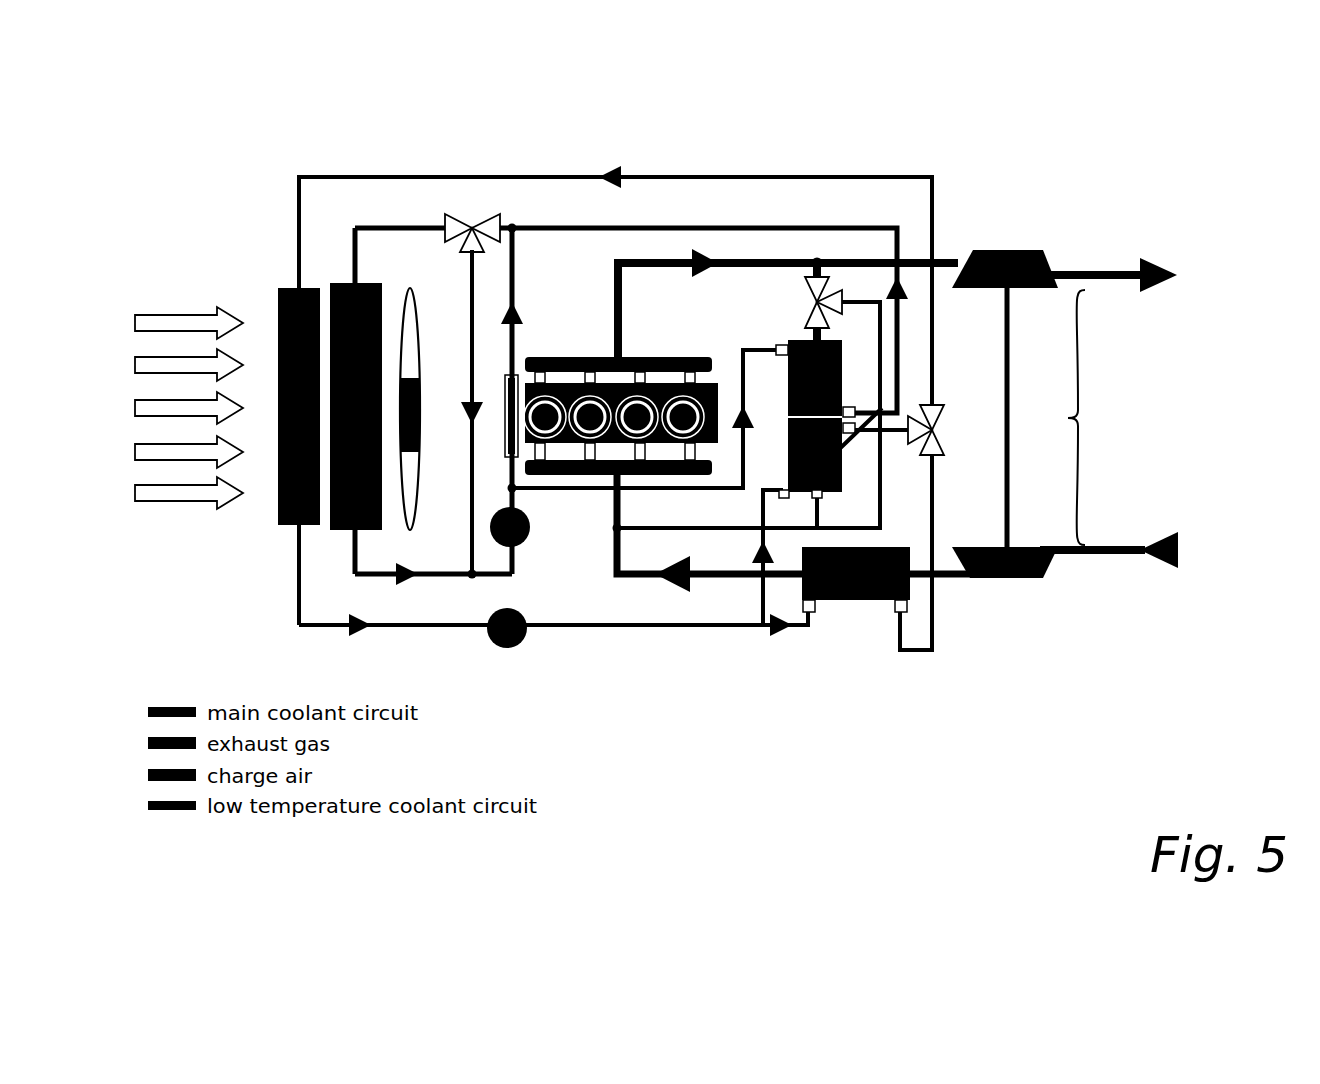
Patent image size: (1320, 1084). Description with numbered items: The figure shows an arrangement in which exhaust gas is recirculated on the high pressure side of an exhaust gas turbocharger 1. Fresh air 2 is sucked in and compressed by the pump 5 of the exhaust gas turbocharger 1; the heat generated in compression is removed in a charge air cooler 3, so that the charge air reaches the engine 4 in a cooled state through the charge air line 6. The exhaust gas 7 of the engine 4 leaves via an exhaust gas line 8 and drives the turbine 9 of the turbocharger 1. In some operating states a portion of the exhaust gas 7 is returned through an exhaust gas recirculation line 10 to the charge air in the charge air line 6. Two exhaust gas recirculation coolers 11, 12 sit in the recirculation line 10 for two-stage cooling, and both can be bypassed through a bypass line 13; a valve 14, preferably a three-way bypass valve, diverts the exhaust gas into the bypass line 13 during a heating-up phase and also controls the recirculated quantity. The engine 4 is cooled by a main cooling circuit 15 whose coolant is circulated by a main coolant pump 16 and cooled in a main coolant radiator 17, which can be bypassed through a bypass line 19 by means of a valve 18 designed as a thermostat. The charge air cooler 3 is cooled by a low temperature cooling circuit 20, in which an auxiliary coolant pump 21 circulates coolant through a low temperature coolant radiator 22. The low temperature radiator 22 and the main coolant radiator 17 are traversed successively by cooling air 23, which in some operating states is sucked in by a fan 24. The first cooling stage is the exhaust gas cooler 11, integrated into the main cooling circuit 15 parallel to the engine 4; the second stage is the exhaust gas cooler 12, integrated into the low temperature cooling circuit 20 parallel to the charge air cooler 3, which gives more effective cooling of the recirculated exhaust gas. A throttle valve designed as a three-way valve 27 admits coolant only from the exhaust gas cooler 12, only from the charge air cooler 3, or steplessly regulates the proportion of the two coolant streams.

The exhaust gas turbocharger 1 is at (1094, 417).
The fresh air 2 is at (1135, 553).
The charge air cooler 3 is at (848, 605).
The engine 4 is at (563, 357).
The pump 5 is at (1020, 580).
The charge air line 6 is at (632, 582).
The exhaust gas 7 is at (1147, 276).
The exhaust gas line 8 is at (757, 263).
The turbine 9 is at (1020, 250).
The exhaust gas recirculation line 10 is at (723, 528).
The exhaust gas recirculation cooler 11 is at (842, 338).
The exhaust gas recirculation cooler 12 is at (936, 262).
The bypass line 13 is at (883, 485).
The valve 14 is at (805, 303).
The main cooling circuit 15 is at (444, 578).
The main coolant pump 16 is at (522, 540).
The main coolant radiator 17 is at (342, 283).
The valve 18 is at (466, 226).
The bypass line 19 is at (468, 325).
The low temperature cooling circuit 20 is at (298, 592).
The auxiliary coolant pump 21 is at (510, 645).
The low temperature coolant radiator 22 is at (282, 292).
The cooling air 23 is at (159, 408).
The fan 24 is at (345, 527).
The three-way valve 27 is at (935, 432).